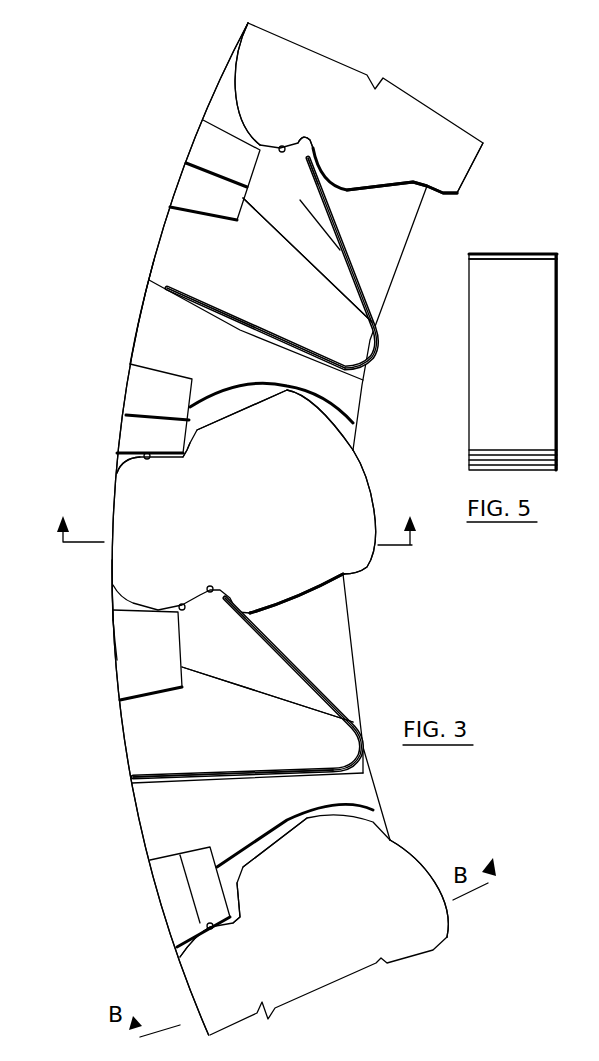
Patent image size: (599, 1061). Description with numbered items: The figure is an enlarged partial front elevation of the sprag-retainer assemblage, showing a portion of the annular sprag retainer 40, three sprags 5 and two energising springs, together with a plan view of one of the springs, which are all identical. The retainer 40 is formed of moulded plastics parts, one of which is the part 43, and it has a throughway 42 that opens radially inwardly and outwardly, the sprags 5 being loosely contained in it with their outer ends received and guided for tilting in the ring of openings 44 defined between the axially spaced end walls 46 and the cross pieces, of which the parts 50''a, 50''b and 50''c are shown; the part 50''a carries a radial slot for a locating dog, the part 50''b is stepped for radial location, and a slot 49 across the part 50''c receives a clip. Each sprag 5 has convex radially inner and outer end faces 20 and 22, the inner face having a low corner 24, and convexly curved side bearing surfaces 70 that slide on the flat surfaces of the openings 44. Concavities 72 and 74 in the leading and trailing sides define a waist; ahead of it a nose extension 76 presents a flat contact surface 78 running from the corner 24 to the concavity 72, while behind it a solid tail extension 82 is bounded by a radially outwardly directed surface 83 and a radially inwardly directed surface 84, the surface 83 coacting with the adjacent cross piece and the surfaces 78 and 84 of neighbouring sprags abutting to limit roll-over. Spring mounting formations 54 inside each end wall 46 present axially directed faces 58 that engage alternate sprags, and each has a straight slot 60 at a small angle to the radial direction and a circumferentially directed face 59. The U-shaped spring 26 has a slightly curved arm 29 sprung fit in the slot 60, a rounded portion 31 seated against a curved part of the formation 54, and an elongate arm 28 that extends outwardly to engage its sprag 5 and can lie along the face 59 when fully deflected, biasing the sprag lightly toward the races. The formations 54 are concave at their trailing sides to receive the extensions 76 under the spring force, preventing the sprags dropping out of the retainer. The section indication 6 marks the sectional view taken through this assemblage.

In FIG. 3, the sprag 5 is at (258, 57).
In FIG. 3, the radially outer end face 22 is at (232, 78).
In FIG. 3, the opening 44 is at (220, 105).
In FIG. 3, the sprag retainer 40 is at (130, 330).
In FIG. 3, the injection moulded plastics part 43 is at (110, 589).
In FIG. 3, the slot 49 is at (119, 646).
In FIG. 3, the spring mounting formation 54 is at (158, 317).
In FIG. 3, the radially inner end face 20 is at (483, 143).
In FIG. 3, the radially inwardly directed surface 84 is at (378, 186).
In FIG. 3, the end wall 46 is at (425, 188).
In FIG. 3, the throughway 42 is at (337, 630).
In FIG. 3, the side bearing surface 70 is at (282, 153).
In FIG. 3, the concavity 74 is at (300, 140).
In FIG. 3, the concavity 72 is at (192, 447).
In FIG. 3, the nose extension 76 is at (263, 414).
In FIG. 3, the contact surface 78 is at (250, 387).
In FIG. 3, the low corner 24 is at (307, 399).
In FIG. 3, the energising spring 26 is at (324, 227).
In FIG. 5, the energising spring 26 is at (478, 293).
In FIG. 3, the spring arm 28 is at (355, 265).
In FIG. 5, the spring arm 28 is at (530, 254).
In FIG. 3, the rearward extension 82 is at (340, 170).
In FIG. 3, the radially outwardly directed surface 83 is at (313, 157).
In FIG. 3, the further spring arm 29 is at (248, 328).
In FIG. 5, the further spring arm 29 is at (480, 462).
In FIG. 3, the rounded portion 31 is at (378, 353).
In FIG. 3, the slot 60 is at (263, 331).
In FIG. 3, the circumferentially directed face 59 is at (325, 265).
In FIG. 3, the axially directed face 58 is at (261, 266).
In FIG. 3, the cross piece part 50''a is at (185, 286).
In FIG. 3, the cross piece part 50''b is at (165, 897).
In FIG. 3, the cross piece part 50''c is at (114, 655).
In FIG. 3, the section line 6 is at (45, 542).